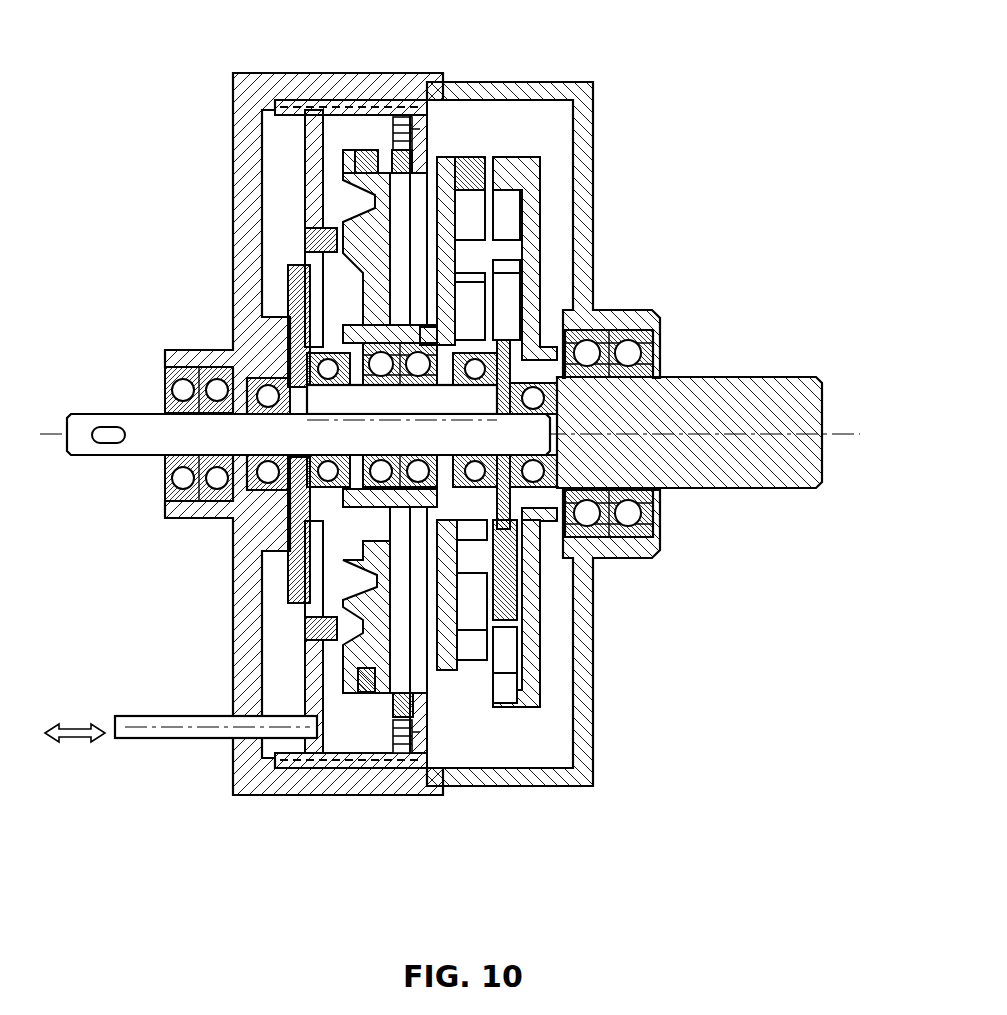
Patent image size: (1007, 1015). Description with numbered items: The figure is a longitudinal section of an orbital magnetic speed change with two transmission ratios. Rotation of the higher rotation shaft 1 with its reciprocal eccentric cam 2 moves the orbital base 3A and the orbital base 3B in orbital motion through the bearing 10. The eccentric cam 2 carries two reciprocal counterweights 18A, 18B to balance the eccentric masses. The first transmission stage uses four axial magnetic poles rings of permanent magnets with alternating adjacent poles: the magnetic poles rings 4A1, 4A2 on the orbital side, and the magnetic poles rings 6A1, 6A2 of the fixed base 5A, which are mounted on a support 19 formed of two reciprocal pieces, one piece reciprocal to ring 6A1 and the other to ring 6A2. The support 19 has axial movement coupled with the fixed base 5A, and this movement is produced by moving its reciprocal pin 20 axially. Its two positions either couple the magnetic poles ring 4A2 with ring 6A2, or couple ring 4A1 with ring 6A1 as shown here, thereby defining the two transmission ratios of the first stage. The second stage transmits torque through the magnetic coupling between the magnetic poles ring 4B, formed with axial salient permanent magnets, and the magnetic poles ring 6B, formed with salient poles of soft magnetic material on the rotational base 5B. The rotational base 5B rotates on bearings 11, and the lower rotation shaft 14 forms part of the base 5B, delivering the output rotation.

The higher rotation shaft 1 is at (155, 420).
The eccentric cam 2 is at (347, 402).
The orbital base 3A is at (380, 540).
The orbital base 3B is at (440, 173).
The magnetic poles ring 4A1 is at (350, 608).
The magnetic poles ring 4A2 is at (363, 677).
The magnetic poles ring 4B is at (480, 660).
The fixed base 5A is at (248, 135).
The rotational base 5B is at (532, 193).
The magnetic poles ring 6A1 is at (315, 240).
The magnetic poles ring 6A2 is at (397, 160).
The magnetic poles ring 6B is at (508, 690).
The bearing 10 is at (380, 360).
The bearings 11 is at (630, 353).
The lower rotation shaft 14 is at (742, 500).
The counterweight 18A is at (298, 537).
The counterweight 18B is at (503, 570).
The support 19 is at (377, 107).
The pin 20 is at (197, 732).